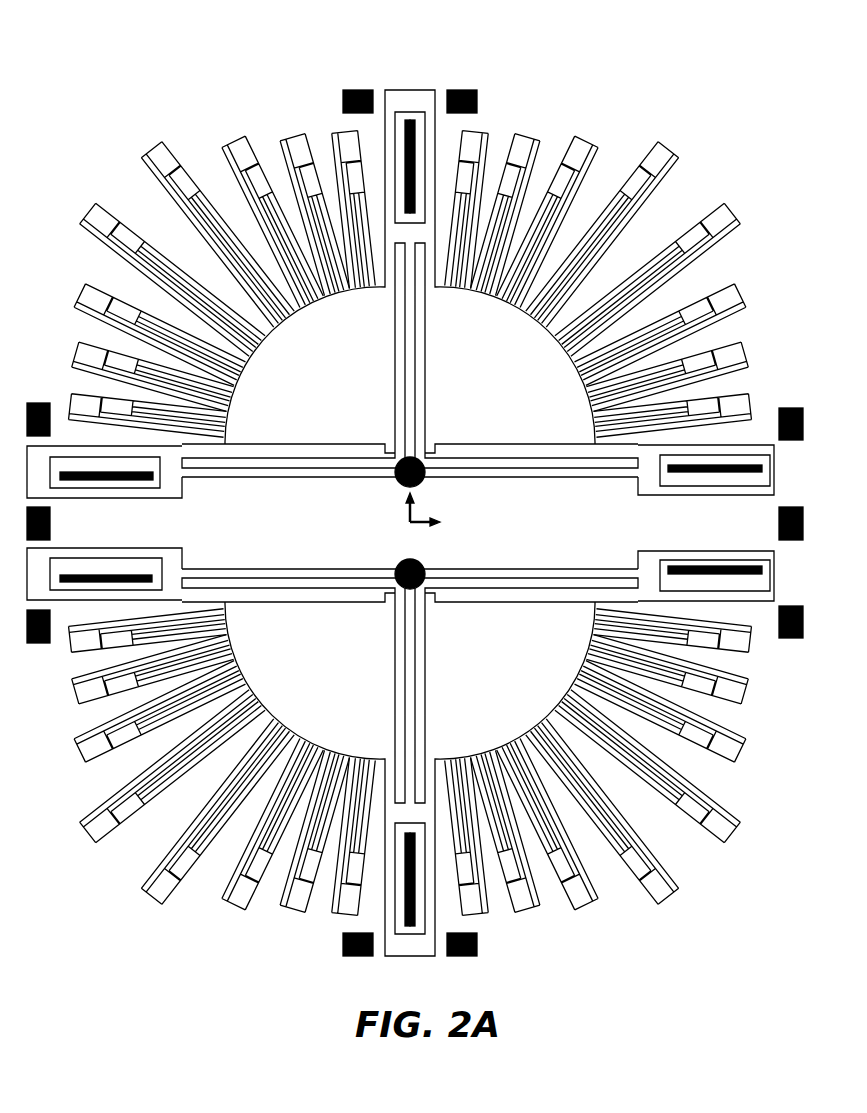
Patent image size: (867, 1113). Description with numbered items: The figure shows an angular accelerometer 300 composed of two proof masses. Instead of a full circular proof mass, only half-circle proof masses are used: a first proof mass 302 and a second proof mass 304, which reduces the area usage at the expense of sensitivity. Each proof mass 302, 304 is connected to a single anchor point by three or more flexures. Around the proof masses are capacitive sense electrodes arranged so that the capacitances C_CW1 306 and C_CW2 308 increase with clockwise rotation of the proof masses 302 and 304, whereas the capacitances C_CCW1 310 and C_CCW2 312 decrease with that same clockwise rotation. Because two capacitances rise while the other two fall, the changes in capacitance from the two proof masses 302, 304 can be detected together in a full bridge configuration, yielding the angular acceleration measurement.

The gyroscope structure 300 is at (150, 105).
The proof mass 302 is at (472, 337).
The proof mass 304 is at (480, 710).
The capacitance C_CW1 306 is at (628, 235).
The capacitance C_CW2 308 is at (655, 797).
The capacitance C_CCW1 310 is at (596, 215).
The capacitance C_CCW2 312 is at (674, 766).